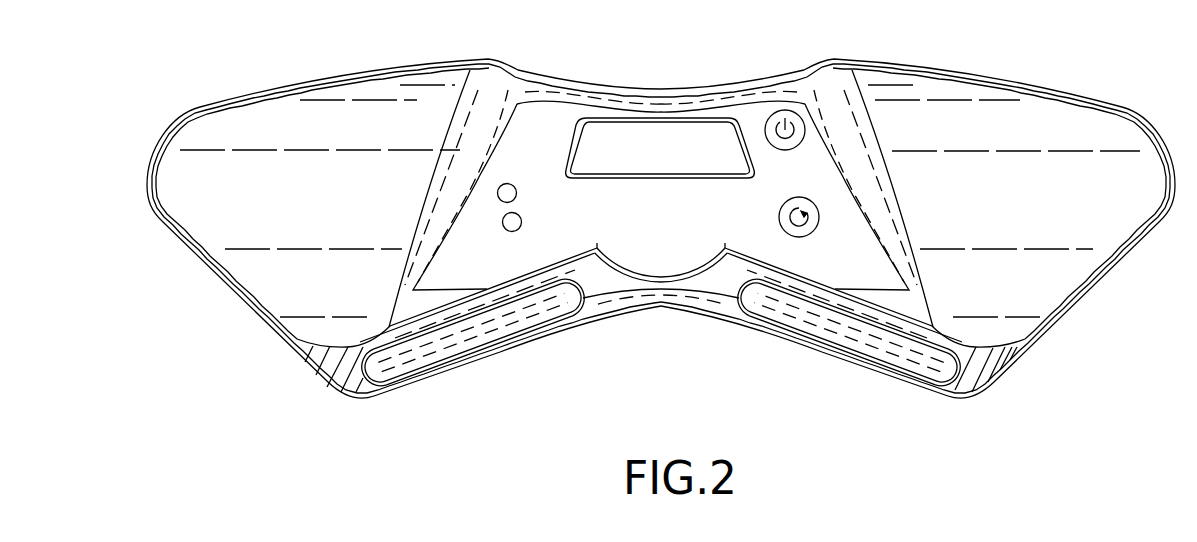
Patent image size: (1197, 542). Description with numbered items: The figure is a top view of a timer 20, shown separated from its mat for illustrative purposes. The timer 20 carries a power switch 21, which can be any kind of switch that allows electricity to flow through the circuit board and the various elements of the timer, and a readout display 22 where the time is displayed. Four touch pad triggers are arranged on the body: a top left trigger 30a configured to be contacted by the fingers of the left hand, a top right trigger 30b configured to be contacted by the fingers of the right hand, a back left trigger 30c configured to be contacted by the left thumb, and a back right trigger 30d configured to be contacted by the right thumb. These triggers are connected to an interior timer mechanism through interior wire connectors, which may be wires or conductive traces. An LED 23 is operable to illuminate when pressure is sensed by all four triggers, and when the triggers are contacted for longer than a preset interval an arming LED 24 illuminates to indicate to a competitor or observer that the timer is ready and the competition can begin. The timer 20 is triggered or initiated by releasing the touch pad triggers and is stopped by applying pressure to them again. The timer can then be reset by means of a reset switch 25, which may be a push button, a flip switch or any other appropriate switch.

The timer 20 is at (147, 180).
The power switch 21 is at (786, 110).
The readout display 22 is at (645, 117).
The LED 23 is at (512, 232).
The arming LED 24 is at (507, 183).
The reset switch 25 is at (799, 237).
The top left trigger 30a is at (217, 122).
The top right trigger 30b is at (1110, 127).
The back left trigger 30c is at (467, 337).
The back right trigger 30d is at (893, 352).